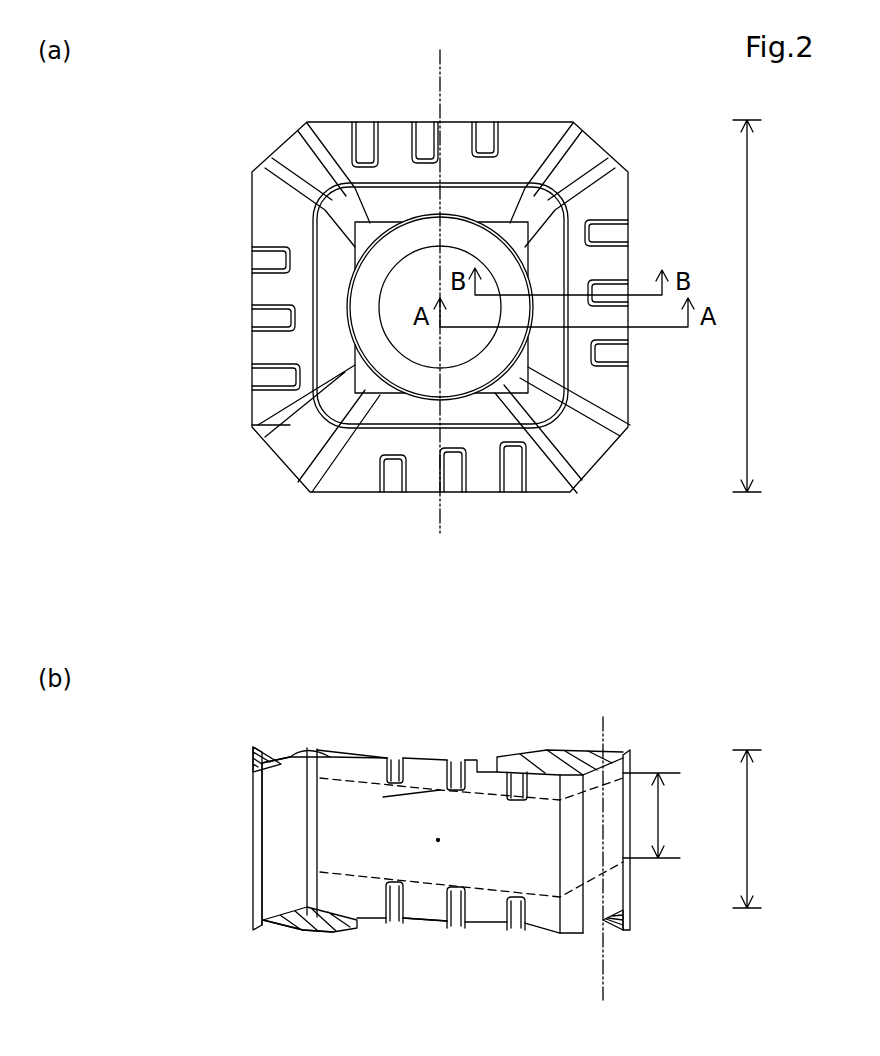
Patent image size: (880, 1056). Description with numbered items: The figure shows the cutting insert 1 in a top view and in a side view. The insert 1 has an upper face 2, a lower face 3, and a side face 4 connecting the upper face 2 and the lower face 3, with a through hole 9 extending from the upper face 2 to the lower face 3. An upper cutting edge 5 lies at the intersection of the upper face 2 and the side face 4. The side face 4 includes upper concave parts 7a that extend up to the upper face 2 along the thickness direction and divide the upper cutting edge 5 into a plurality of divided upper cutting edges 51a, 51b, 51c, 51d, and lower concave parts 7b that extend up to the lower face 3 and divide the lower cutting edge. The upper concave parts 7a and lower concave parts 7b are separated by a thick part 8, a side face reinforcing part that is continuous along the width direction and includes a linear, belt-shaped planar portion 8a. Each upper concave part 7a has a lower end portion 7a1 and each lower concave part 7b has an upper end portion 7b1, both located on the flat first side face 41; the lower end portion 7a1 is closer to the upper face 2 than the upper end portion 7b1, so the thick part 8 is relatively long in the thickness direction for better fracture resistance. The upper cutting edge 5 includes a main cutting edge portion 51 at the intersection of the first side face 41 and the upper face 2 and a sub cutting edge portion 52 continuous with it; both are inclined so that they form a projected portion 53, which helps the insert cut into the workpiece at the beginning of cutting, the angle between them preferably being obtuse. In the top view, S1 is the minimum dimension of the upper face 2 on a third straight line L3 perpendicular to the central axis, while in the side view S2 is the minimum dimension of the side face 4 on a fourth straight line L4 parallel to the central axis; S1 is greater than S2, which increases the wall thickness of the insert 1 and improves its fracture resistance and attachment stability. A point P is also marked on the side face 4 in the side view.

The cutting insert 1 is at (620, 145).
The upper face 2 is at (573, 442).
The lower face 3 is at (320, 923).
The side face 4 is at (380, 850).
The upper cutting edge 5 is at (72, 115).
The thick part 8 is at (225, 853).
The through hole 9 is at (413, 340).
The first side face 41 is at (253, 952).
The main cutting edge portion 51 is at (135, 203).
The divided upper cutting edge 51a is at (252, 410).
The divided upper cutting edge 51b is at (252, 348).
The divided upper cutting edge 51c is at (252, 290).
The divided upper cutting edge 51d is at (252, 222).
The sub cutting edge portion 52 is at (288, 150).
The projected portion 53 is at (310, 748).
The upper concave part 7a is at (393, 480).
The lower concave part 7b is at (393, 907).
The lower end portion 7a1 is at (517, 800).
The upper end portion 7b1 is at (520, 890).
The planar portion 8a is at (660, 815).
The reference point P is at (438, 840).
The third straight line L3 is at (440, 86).
The fourth straight line L4 is at (605, 963).
The minimum dimension of the upper face S1 is at (762, 306).
The minimum dimension of the side face S2 is at (762, 829).